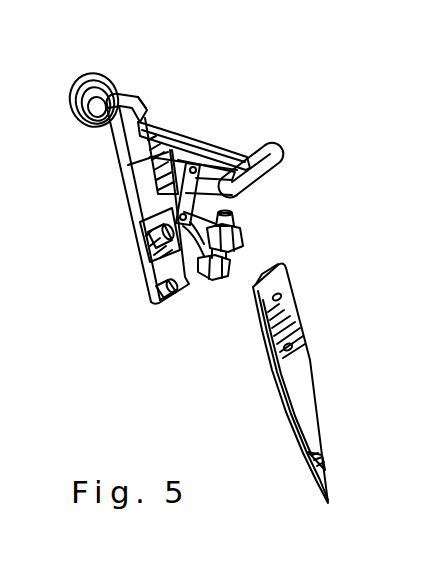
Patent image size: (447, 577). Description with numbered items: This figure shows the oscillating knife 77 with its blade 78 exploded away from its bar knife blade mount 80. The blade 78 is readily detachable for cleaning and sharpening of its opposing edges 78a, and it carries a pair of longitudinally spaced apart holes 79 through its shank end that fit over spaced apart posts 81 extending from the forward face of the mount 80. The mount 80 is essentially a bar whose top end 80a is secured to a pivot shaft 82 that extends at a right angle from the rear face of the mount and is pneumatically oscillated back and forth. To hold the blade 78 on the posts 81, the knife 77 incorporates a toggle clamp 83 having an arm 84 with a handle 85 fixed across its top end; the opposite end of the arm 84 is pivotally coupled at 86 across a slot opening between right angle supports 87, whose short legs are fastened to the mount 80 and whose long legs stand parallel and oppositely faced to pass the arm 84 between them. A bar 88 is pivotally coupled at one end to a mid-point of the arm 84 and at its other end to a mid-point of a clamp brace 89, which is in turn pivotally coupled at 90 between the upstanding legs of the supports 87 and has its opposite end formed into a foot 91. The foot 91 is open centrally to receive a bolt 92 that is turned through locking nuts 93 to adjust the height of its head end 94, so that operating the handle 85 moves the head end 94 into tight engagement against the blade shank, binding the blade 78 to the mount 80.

The oscillating knife 77 is at (298, 167).
The blade 78 is at (304, 382).
The opposing edges 78a is at (322, 455).
The holes 79 is at (284, 296).
The bar knife blade mount 80 is at (120, 180).
The top end 80a is at (138, 118).
The posts 81 is at (146, 238).
The pivot shaft 82 is at (93, 110).
The toggle clamp 83 is at (198, 142).
The arm 84 is at (210, 150).
The handle 85 is at (280, 152).
The pivotal coupling 86 is at (158, 132).
The right angle supports 87 is at (152, 130).
The bar 88 is at (228, 195).
The clamp brace 89 is at (226, 206).
The pivotal coupling 90 is at (128, 182).
The foot 91 is at (197, 280).
The bolt 92 is at (254, 282).
The locking nuts 93 is at (238, 244).
The head end 94 is at (210, 268).